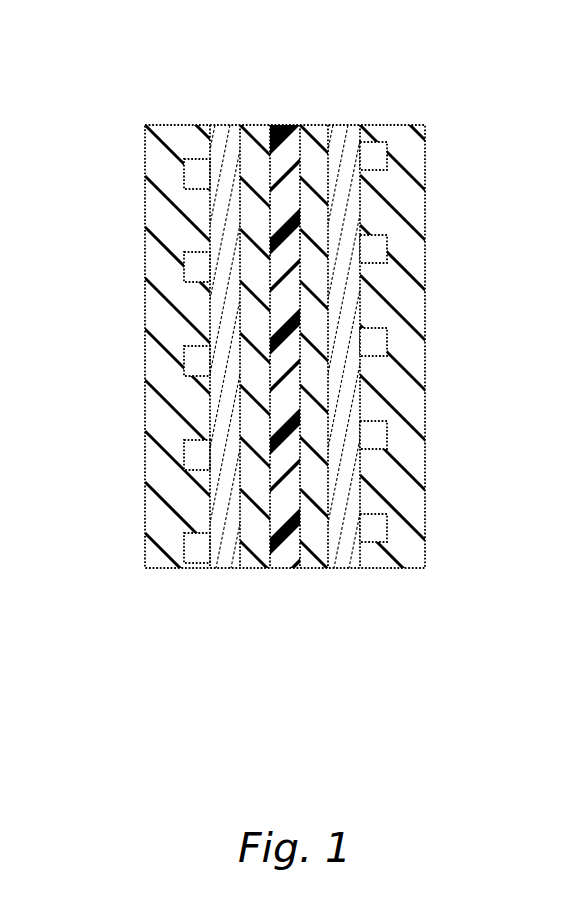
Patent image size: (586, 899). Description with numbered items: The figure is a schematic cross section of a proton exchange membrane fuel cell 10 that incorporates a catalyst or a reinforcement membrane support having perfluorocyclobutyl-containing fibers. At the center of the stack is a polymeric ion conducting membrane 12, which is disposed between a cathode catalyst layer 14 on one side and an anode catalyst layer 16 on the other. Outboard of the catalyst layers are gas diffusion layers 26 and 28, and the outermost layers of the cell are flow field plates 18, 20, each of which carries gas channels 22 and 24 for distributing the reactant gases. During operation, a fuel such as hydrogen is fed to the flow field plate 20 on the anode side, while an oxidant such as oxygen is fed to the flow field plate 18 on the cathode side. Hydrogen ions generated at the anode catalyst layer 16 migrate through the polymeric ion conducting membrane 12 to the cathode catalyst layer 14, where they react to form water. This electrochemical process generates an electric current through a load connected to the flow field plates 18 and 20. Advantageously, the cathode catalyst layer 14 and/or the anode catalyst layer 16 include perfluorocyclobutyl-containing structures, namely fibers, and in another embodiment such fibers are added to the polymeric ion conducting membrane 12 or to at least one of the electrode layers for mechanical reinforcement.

The proton exchange membrane fuel cell 10 is at (76, 126).
The polymeric ion conducting membrane 12 is at (292, 140).
The cathode catalyst layer 14 is at (260, 140).
The anode catalyst layer 16 is at (312, 132).
The flow field plate 18 is at (180, 140).
The flow field plate 20 is at (385, 132).
The gas channel 22 is at (190, 172).
The gas channel 24 is at (378, 153).
The gas diffusion layer 26 is at (232, 140).
The gas diffusion layer 28 is at (348, 132).